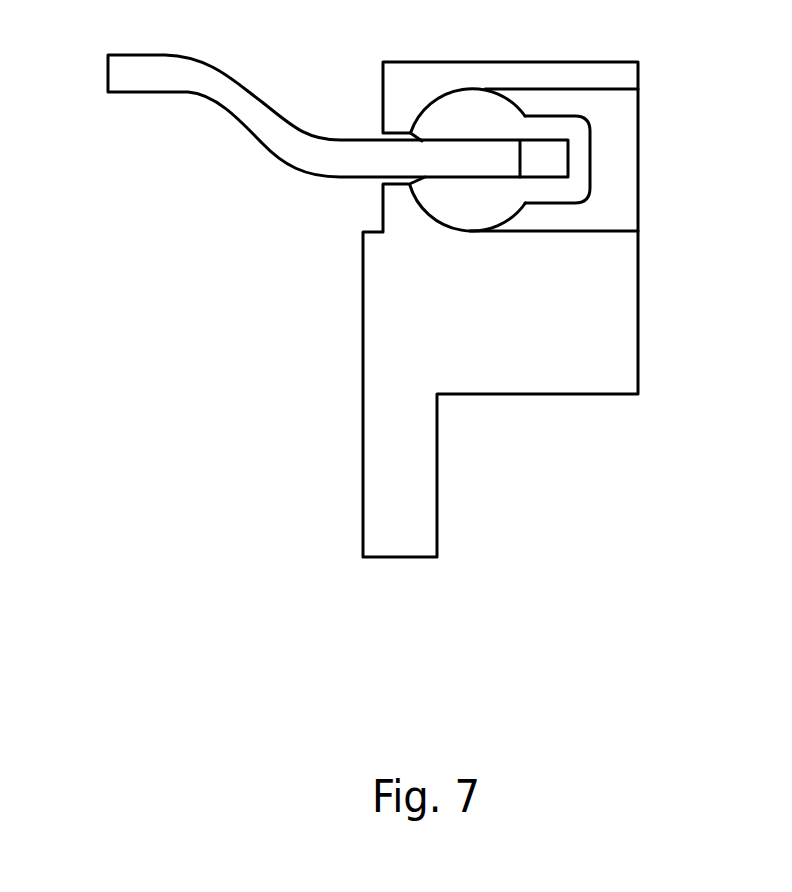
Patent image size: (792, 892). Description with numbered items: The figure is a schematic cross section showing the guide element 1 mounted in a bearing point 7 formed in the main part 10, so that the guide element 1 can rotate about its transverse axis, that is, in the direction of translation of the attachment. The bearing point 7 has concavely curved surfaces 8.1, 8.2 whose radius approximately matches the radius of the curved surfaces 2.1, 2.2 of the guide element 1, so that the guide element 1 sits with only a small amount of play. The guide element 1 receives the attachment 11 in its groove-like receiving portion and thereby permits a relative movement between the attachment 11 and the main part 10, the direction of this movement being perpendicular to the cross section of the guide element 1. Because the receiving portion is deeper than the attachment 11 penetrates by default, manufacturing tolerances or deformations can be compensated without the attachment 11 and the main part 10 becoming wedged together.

The guide element 1 is at (577, 156).
The curved surface 2.1 is at (407, 100).
The curved surface 2.2 is at (401, 212).
The bearing point 7 is at (575, 214).
The concavely curved surface 8.1 is at (448, 120).
The concavely curved surface 8.2 is at (450, 204).
The main part 10 is at (612, 77).
The attachment 11 is at (283, 133).